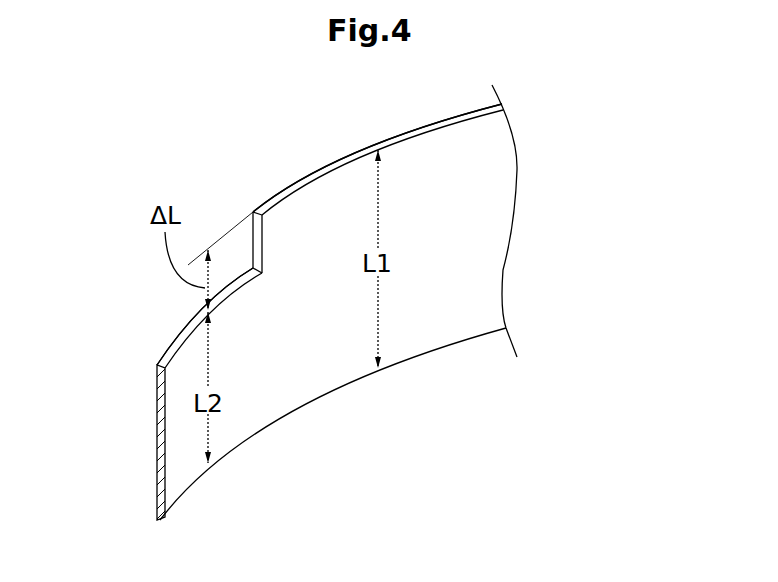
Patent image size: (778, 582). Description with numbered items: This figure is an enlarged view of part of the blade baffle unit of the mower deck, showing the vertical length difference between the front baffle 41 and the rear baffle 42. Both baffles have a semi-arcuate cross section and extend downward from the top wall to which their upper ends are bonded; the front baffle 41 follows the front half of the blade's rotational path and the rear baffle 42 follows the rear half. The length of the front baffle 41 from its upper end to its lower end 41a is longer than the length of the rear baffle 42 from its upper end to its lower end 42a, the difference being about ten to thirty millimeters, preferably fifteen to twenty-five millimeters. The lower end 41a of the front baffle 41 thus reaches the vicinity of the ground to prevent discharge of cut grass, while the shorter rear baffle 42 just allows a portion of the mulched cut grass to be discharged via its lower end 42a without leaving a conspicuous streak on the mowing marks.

The front baffle 41 is at (468, 227).
The lower end of front baffle 41a is at (322, 168).
The rear baffle 42 is at (240, 385).
The lower end of rear baffle 42a is at (168, 347).